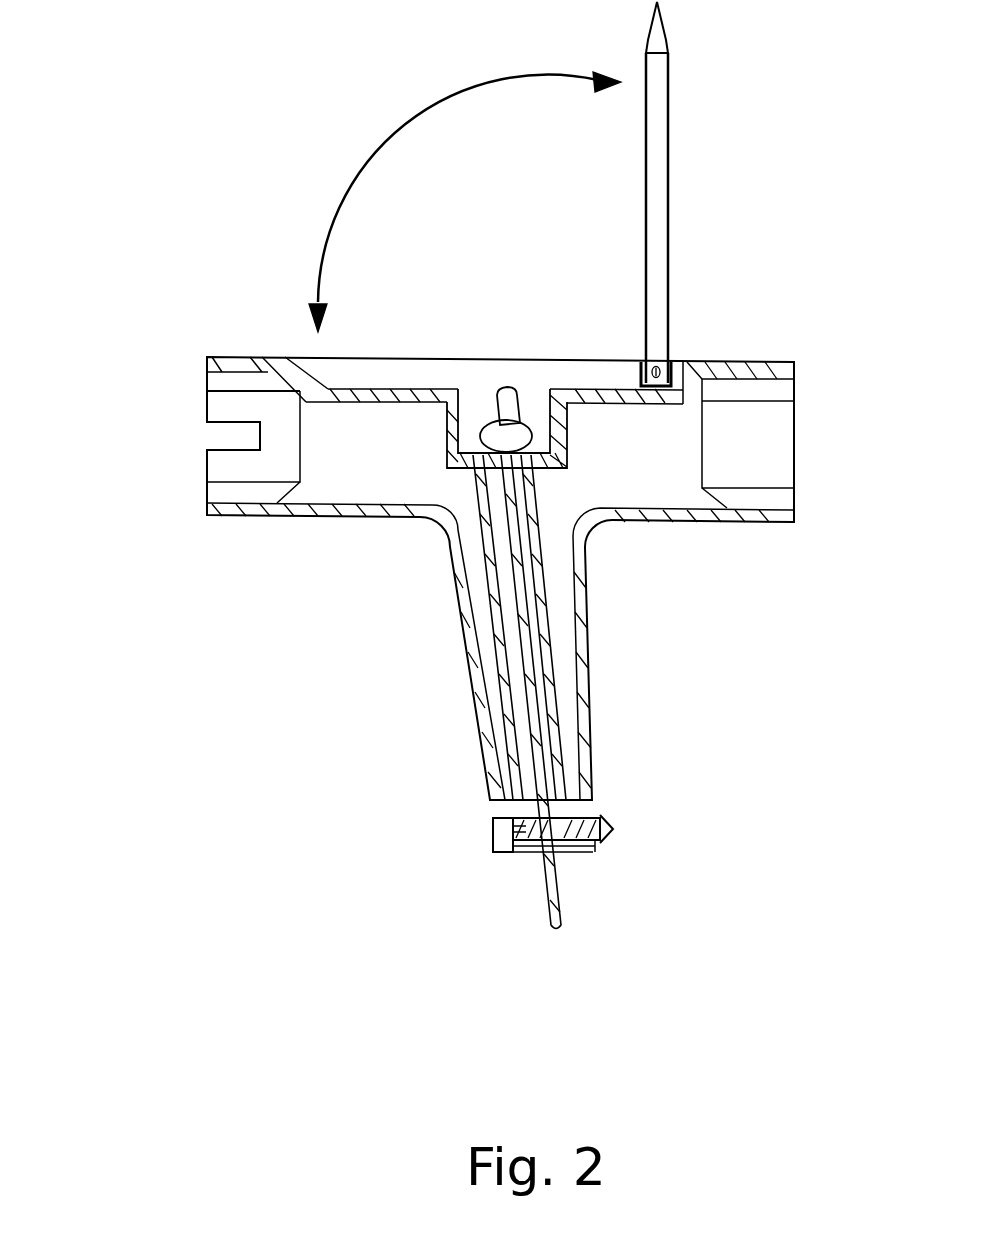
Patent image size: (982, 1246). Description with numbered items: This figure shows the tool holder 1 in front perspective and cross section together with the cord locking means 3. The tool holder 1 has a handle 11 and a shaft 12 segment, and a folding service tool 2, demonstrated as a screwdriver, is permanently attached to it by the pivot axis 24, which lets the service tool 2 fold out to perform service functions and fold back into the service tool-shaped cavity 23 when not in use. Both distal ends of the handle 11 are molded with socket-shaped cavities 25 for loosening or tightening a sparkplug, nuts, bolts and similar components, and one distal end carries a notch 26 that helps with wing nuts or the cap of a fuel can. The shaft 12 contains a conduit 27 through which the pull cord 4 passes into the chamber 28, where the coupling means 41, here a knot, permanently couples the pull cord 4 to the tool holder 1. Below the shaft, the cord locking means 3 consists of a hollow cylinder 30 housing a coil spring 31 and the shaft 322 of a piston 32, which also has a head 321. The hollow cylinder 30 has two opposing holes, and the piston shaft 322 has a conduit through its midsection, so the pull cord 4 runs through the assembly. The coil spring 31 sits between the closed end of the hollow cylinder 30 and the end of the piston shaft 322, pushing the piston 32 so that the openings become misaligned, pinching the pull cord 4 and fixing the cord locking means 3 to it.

The tool holder 1 is at (606, 544).
The folding service tool 2 is at (672, 128).
The cord locking means 3 is at (563, 849).
The pull cord 4 is at (566, 918).
The handle segment 11 is at (350, 516).
The shaft segment 12 is at (460, 620).
The service tool-shaped cavity 23 is at (345, 367).
The pivot axis 24 is at (662, 360).
The socket-shaped cavities 25 is at (225, 463).
The notch 26 is at (227, 437).
The conduit 27 is at (540, 690).
The chamber 28 is at (478, 400).
The hollow cylinder 30 is at (497, 848).
The coil spring 31 is at (515, 852).
The piston 32 is at (634, 842).
The coupling means 41 is at (536, 388).
The head 321 is at (606, 816).
The shaft 322 is at (582, 848).